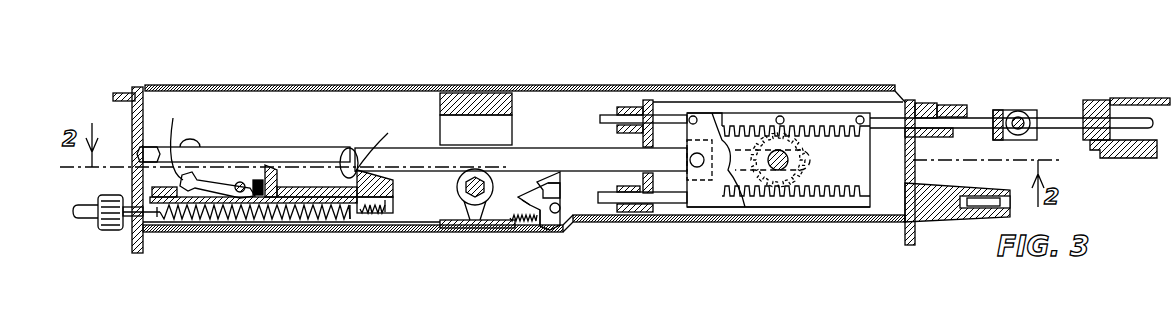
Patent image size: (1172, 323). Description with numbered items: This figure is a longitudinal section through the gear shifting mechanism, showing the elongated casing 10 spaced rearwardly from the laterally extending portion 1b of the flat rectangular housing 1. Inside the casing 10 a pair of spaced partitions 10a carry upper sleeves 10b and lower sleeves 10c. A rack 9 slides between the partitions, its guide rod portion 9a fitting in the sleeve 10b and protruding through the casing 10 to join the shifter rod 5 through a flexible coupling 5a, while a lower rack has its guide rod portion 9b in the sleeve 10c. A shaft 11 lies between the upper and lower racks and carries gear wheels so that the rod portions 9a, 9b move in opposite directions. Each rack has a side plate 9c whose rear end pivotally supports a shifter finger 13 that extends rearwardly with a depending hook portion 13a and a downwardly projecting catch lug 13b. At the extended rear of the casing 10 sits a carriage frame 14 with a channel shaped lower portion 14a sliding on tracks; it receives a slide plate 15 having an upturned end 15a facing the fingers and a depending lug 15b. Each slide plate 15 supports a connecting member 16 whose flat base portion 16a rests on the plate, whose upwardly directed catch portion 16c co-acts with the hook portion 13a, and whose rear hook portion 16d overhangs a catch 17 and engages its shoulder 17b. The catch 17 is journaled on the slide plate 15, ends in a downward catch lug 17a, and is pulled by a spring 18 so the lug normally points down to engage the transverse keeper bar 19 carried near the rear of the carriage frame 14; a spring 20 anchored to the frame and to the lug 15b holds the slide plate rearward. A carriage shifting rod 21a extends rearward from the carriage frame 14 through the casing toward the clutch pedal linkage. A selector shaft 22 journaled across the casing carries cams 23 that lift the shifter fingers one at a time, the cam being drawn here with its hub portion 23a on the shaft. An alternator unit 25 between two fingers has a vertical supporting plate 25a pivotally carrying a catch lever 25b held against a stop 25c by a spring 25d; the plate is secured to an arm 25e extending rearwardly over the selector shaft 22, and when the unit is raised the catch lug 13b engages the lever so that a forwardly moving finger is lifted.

The housing 1 is at (1130, 158).
The remaining portion of housing 1b is at (1135, 98).
The shifter rod 5 is at (1048, 118).
The flexible coupling 5a is at (1020, 110).
The rack 9 is at (735, 127).
The guide rod portion 9a is at (705, 120).
The guide rod portion 9b is at (672, 205).
The side plate 9c is at (735, 200).
The casing 10 is at (580, 222).
The partition 10a is at (648, 110).
The sleeve 10b is at (625, 115).
The sleeve 10c is at (625, 203).
The shaft 11 is at (776, 172).
The shifter finger 13 is at (529, 159).
The hook portion 13a is at (349, 148).
The catch lug 13b is at (540, 172).
The carriage frame 14 is at (215, 203).
The channel shaped lower portion 14a is at (255, 220).
The slide plate 15 is at (380, 213).
The upturned end 15a is at (385, 182).
The lug 15b is at (395, 195).
The connecting member 16 is at (290, 187).
The flat base portion 16a is at (263, 196).
The catch portion 16c is at (385, 144).
The hook portion 16d is at (272, 165).
The catch 17 is at (205, 182).
The catch lug 17a is at (190, 139).
The shoulder 17b is at (241, 182).
The spring 18 is at (225, 220).
The keeper bar 19 is at (152, 190).
The spring 20 is at (345, 215).
The carriage shifting rod 21a is at (88, 218).
The selector shaft 22 is at (450, 224).
The cam 23 is at (465, 205).
The bearing pin 23a is at (472, 200).
The alternator unit 25 is at (545, 230).
The supporting plate 25a is at (525, 203).
The catch lever 25b is at (525, 222).
The stop 25c is at (560, 192).
The spring 25d is at (540, 226).
The arm 25e is at (308, 187).